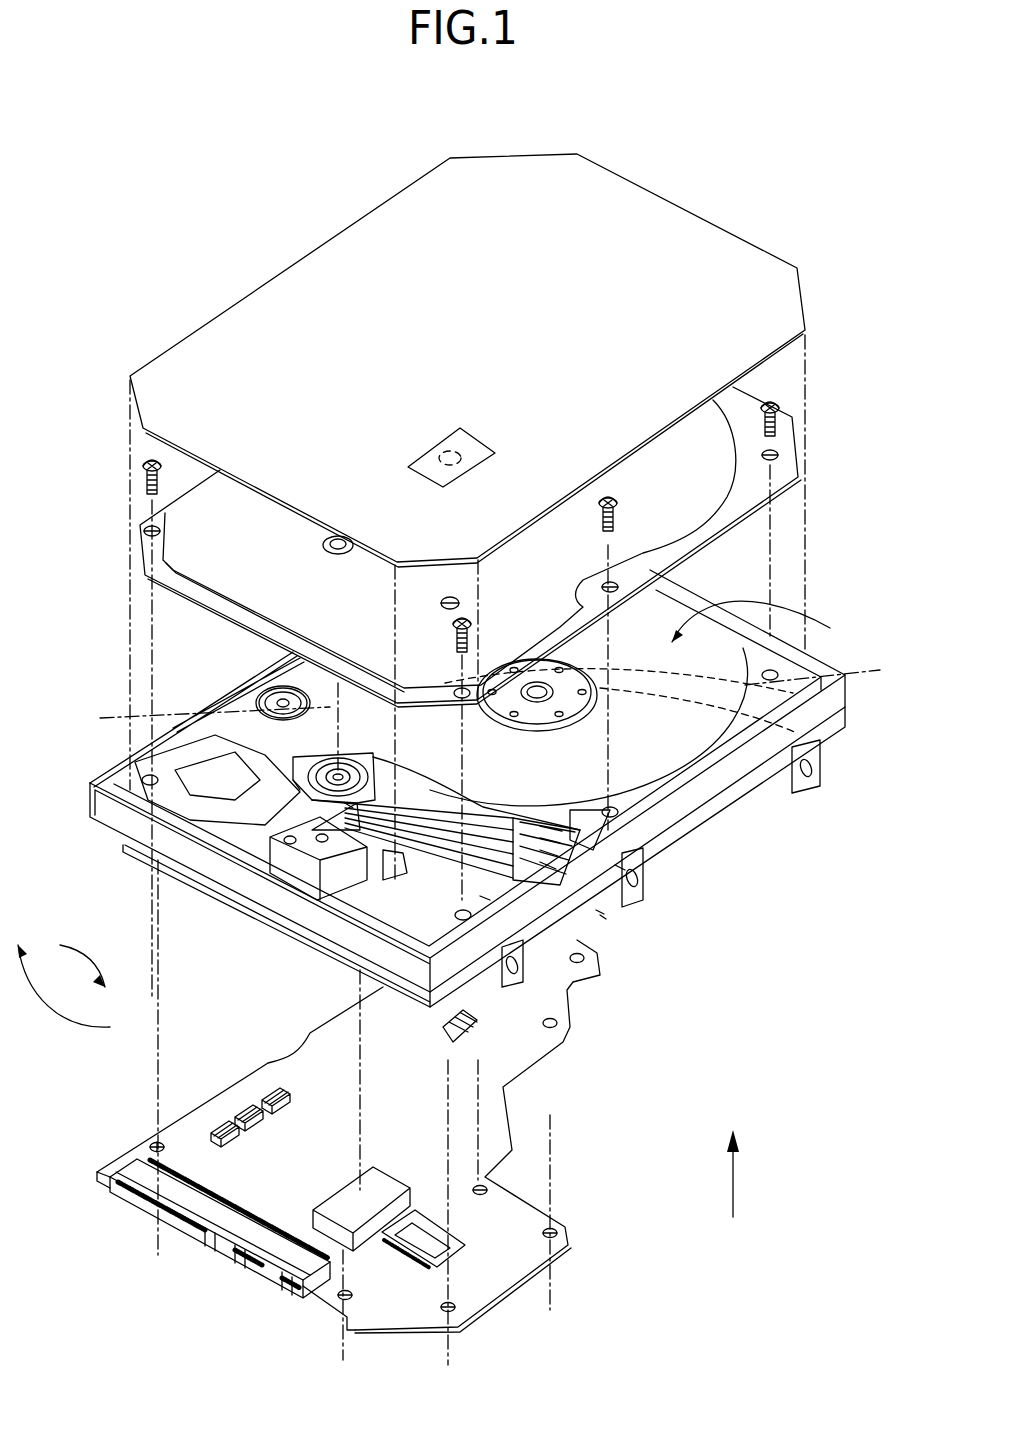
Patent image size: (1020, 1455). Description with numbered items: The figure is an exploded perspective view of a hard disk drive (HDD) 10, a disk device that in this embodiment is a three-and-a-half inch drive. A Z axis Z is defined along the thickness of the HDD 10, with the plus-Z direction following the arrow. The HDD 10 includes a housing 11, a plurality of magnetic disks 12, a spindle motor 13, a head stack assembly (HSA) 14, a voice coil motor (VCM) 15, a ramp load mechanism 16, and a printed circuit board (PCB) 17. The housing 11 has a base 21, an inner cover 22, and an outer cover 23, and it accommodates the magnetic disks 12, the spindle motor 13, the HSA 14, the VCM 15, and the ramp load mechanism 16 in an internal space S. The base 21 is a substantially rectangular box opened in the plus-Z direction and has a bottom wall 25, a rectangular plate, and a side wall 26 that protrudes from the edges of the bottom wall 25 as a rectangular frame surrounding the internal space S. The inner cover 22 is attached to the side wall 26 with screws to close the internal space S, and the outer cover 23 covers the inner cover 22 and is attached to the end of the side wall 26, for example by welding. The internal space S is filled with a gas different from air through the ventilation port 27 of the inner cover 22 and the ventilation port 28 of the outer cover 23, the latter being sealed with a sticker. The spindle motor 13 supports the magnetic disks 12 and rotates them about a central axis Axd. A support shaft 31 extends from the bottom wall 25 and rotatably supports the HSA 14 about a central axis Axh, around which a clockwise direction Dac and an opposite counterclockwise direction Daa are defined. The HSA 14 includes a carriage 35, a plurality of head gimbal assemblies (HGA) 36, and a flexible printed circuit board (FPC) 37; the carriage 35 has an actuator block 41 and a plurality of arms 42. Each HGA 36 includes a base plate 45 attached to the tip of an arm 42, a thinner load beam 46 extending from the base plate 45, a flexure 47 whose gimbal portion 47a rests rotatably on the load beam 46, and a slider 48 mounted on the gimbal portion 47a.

The hard disk drive (HDD) 10 is at (192, 282).
The housing 11 is at (673, 855).
The magnetic disk 12 is at (683, 752).
The spindle motor 13 is at (683, 752).
The head stack assembly (HSA) 14 is at (303, 762).
The voice coil motor (VCM) 15 is at (243, 805).
The ramp load mechanism 16 is at (577, 835).
The printed circuit board (PCB) 17 is at (523, 1110).
The base 21 is at (572, 974).
The inner cover 22 is at (695, 498).
The outer cover 23 is at (625, 208).
The bottom wall 25 is at (485, 898).
The side wall 26 is at (603, 917).
The ventilation port 27 is at (445, 603).
The ventilation port 28 is at (450, 468).
The support shaft 31 is at (338, 770).
The carriage 35 is at (462, 809).
The head gimbal assembly (HGA) 36 is at (533, 815).
The flexible printed circuit board (FPC) 37 is at (393, 912).
The actuator block 41 is at (307, 752).
The arm 42 is at (450, 800).
The base plate 45 is at (600, 912).
The load beam 46 is at (615, 865).
The flexure 47 is at (353, 808).
The gimbal portion 47a is at (581, 801).
The slider 48 is at (573, 835).
The internal space S is at (760, 621).
The central axis Axd is at (835, 671).
The central axis Axh is at (191, 718).
The counterclockwise direction Daa is at (91, 962).
The clockwise direction Dac is at (57, 988).
The Z axis Z is at (743, 1173).